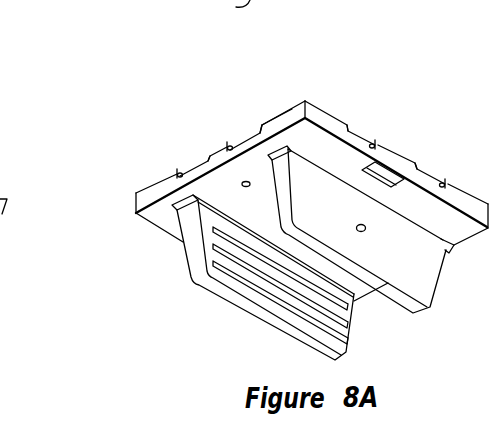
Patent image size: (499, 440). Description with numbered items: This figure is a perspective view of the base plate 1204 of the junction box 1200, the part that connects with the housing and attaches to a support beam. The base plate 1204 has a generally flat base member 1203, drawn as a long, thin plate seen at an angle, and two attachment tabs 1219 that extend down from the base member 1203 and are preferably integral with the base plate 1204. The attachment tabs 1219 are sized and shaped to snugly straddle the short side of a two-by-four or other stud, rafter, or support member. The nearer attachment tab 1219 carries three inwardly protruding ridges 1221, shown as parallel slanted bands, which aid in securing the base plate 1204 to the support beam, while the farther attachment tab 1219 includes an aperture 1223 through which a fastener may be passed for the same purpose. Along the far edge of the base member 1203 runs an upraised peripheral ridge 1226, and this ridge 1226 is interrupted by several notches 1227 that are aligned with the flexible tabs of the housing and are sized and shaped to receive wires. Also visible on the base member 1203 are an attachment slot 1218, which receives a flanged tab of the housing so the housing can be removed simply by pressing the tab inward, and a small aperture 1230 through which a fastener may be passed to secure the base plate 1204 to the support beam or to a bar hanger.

The junction box 1200 is at (158, 147).
The base member 1203 is at (168, 220).
The base plate 1204 is at (320, 107).
The attachment slots 1218 is at (386, 174).
The attachment tabs 1219 is at (188, 270).
The inwardly protruding ridges 1221 is at (255, 296).
The apertures 1223 is at (364, 231).
The upraised peripheral ridge 1226 is at (278, 122).
The notches 1227 is at (257, 132).
The apertures 1230 is at (242, 182).